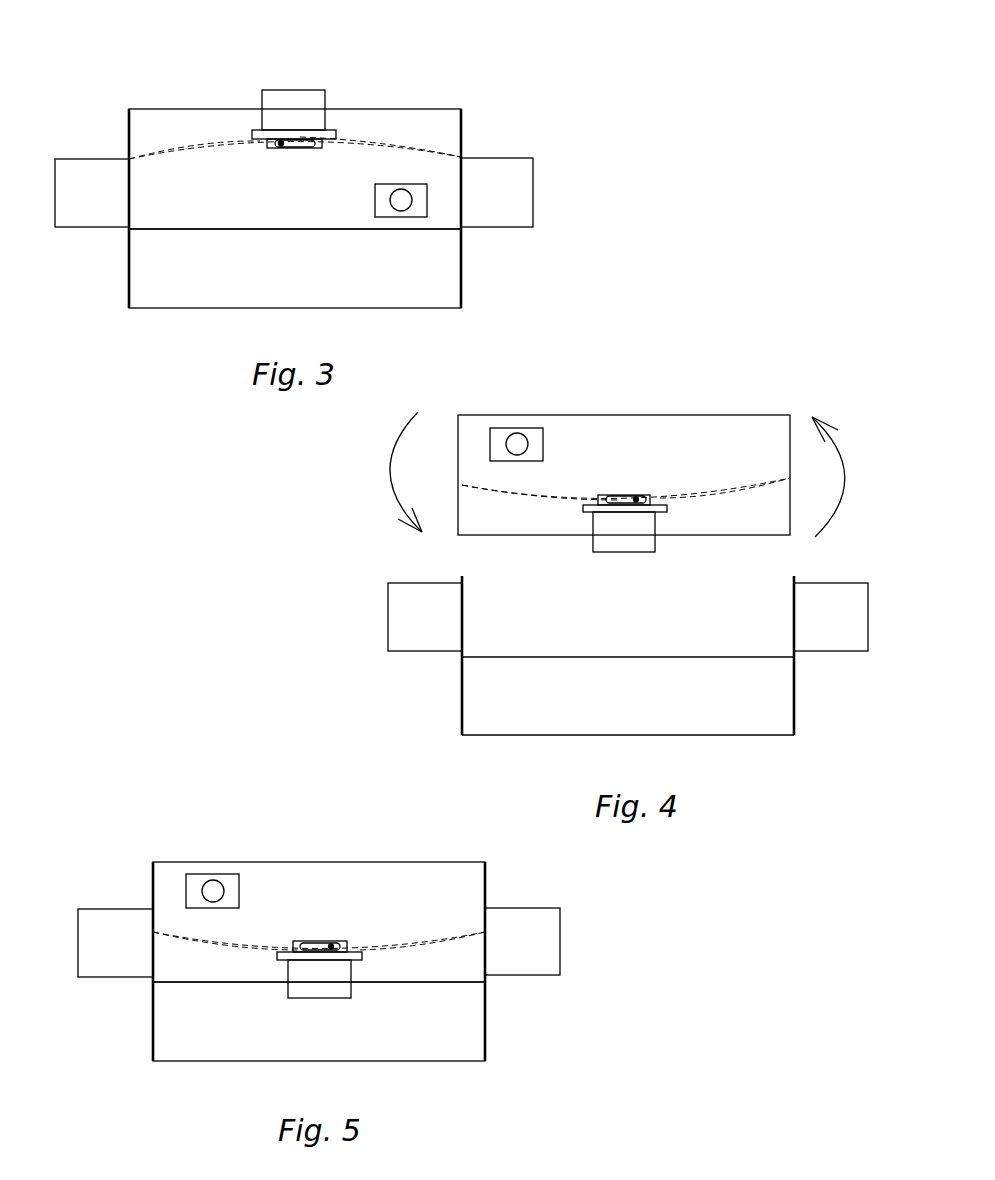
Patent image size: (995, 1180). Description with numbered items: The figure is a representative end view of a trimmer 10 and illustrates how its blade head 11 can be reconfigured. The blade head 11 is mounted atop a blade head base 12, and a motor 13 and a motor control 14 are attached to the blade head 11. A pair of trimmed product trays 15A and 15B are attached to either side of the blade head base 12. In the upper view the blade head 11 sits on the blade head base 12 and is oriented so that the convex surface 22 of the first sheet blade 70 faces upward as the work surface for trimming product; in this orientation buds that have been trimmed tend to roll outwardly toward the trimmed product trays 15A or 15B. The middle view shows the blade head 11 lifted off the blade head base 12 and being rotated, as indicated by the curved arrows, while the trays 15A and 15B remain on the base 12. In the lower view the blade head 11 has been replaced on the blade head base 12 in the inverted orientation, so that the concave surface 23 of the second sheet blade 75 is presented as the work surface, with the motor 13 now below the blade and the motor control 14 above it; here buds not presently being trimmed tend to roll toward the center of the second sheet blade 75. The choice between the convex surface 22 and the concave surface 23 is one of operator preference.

In FIG. 3, the trimmer 10 is at (498, 98).
In FIG. 4, the trimmer 10 is at (742, 362).
In FIG. 5, the trimmer 10 is at (170, 792).
In FIG. 3, the blade head 11 is at (161, 125).
In FIG. 4, the blade head 11 is at (688, 422).
In FIG. 5, the blade head 11 is at (380, 870).
In FIG. 3, the blade head base 12 is at (445, 262).
In FIG. 4, the blade head base 12 is at (472, 714).
In FIG. 5, the blade head base 12 is at (170, 1044).
In FIG. 3, the motor 13 is at (290, 105).
In FIG. 4, the motor 13 is at (607, 538).
In FIG. 5, the motor 13 is at (312, 980).
In FIG. 3, the motor control 14 is at (380, 212).
In FIG. 4, the motor control 14 is at (533, 440).
In FIG. 5, the motor control 14 is at (224, 882).
In FIG. 3, the trimmed product tray 15A is at (90, 173).
In FIG. 4, the trimmed product tray 15A is at (406, 610).
In FIG. 5, the trimmed product tray 15A is at (116, 918).
In FIG. 3, the trimmed product tray 15B is at (517, 178).
In FIG. 4, the trimmed product tray 15B is at (830, 637).
In FIG. 5, the trimmed product tray 15B is at (520, 960).
In FIG. 3, the convex surface 22 is at (410, 150).
In FIG. 4, the concave surface 23 is at (693, 497).
In FIG. 5, the concave surface 23 is at (386, 945).
In FIG. 3, the first sheet blade 70 is at (350, 143).
In FIG. 4, the first sheet blade 70 is at (546, 500).
In FIG. 5, the first sheet blade 70 is at (240, 948).
In FIG. 3, the second sheet blade 75 is at (210, 147).
In FIG. 4, the second sheet blade 75 is at (562, 495).
In FIG. 5, the second sheet blade 75 is at (252, 943).